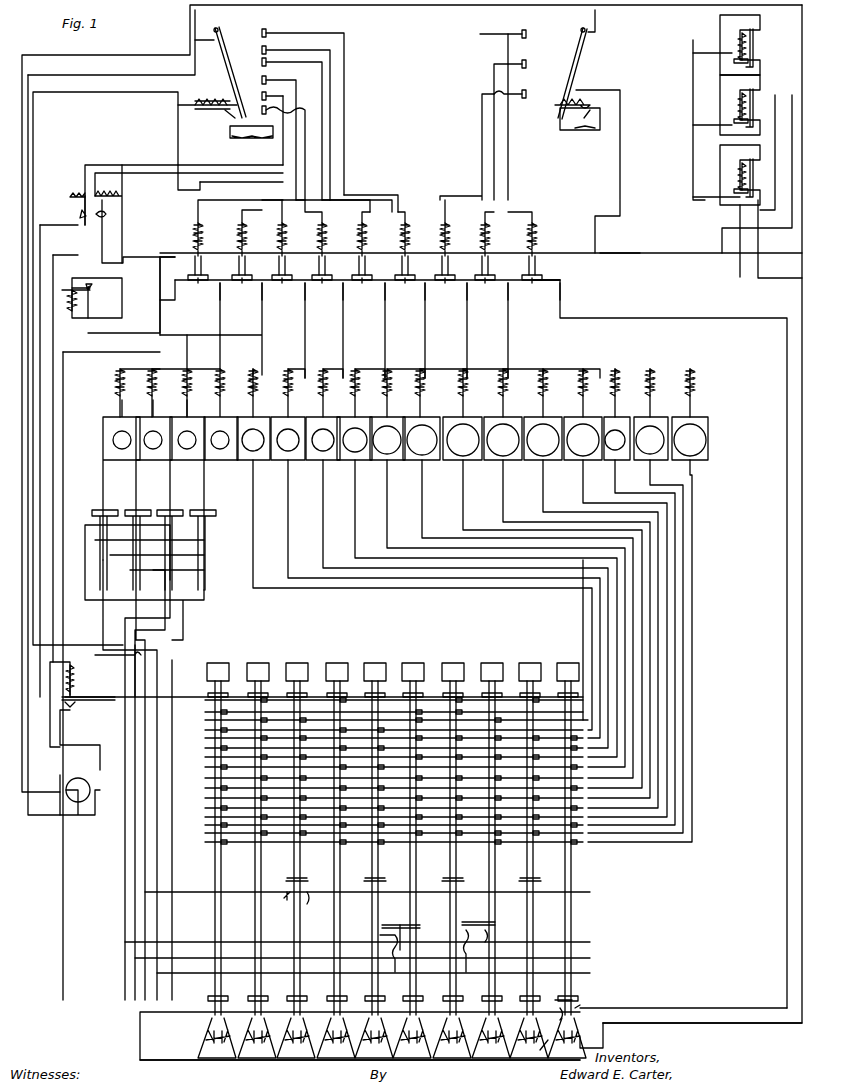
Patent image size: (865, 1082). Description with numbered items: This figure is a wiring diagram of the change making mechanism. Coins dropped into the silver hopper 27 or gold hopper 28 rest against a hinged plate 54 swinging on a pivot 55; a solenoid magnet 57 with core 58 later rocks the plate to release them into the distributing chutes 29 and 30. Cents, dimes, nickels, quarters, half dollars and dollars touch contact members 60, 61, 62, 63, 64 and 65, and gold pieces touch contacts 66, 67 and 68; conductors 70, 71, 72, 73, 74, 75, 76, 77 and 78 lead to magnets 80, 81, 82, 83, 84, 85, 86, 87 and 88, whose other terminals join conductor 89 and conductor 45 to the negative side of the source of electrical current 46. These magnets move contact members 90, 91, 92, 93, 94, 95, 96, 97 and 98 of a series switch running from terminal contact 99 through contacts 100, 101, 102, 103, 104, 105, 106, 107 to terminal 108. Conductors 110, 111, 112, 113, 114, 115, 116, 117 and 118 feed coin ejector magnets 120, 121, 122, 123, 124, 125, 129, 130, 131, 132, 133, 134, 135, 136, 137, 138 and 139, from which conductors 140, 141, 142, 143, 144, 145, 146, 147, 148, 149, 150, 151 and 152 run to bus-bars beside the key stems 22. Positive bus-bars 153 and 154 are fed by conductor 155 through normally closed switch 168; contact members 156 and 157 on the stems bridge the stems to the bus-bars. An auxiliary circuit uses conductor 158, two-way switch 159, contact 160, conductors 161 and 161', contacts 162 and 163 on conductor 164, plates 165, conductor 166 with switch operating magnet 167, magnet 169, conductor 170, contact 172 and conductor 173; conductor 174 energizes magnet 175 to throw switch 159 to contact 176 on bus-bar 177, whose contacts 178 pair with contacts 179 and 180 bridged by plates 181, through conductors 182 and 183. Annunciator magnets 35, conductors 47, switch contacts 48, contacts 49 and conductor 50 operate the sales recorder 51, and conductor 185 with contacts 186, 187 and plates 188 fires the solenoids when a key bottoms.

The stems 22 is at (230, 665).
The hopper 27 is at (228, 72).
The hopper 28 is at (578, 66).
The distributing chute 29 is at (228, 134).
The distributing chute 30 is at (568, 132).
The annunciator magnet 35 is at (732, 178).
The conductor 45 is at (135, 52).
The source of electrical current 46 is at (78, 802).
The conductor 47 is at (658, 1022).
The switch contact 48 is at (578, 1035).
The contact member 49 is at (543, 1041).
The conductor 50 is at (514, 1064).
The sales recorder 51 is at (778, 86).
The hinged plate 54 is at (584, 80).
The pivot 55 is at (214, 30).
The solenoid magnet 57 is at (396, 98).
The core 58 is at (398, 116).
The contact member 60 is at (283, 148).
The contact member 61 is at (268, 93).
The contact member 62 is at (268, 77).
The contact member 63 is at (268, 59).
The contact member 64 is at (268, 47).
The contact member 65 is at (268, 30).
The contact member 66 is at (518, 86).
The contact member 67 is at (518, 56).
The contact member 68 is at (518, 26).
The conductor 70 is at (306, 118).
The conductor 71 is at (281, 148).
The conductor 72 is at (292, 88).
The conductor 73 is at (322, 62).
The conductor 74 is at (328, 58).
The conductor 75 is at (345, 45).
The conductor 76 is at (482, 96).
The conductor 77 is at (496, 66).
The conductor 78 is at (506, 44).
The magnet 80 is at (271, 240).
The magnet 81 is at (224, 240).
The magnet 82 is at (235, 245).
The magnet 83 is at (312, 240).
The magnet 84 is at (352, 246).
The magnet 85 is at (394, 246).
The magnet 86 is at (434, 240).
The magnet 87 is at (474, 246).
The magnet 88 is at (520, 246).
The conductor 89 is at (548, 253).
The contact member 90 is at (294, 269).
The contact member 91 is at (210, 269).
The contact member 92 is at (254, 269).
The contact member 93 is at (334, 269).
The contact member 94 is at (374, 269).
The contact member 95 is at (417, 269).
The contact member 96 is at (457, 269).
The contact member 97 is at (497, 269).
The contact member 98 is at (546, 278).
The terminal contact member 99 is at (171, 278).
The contact member 100 is at (277, 291).
The contact member 101 is at (235, 291).
The contact member 102 is at (320, 291).
The contact member 103 is at (358, 291).
The contact member 104 is at (400, 291).
The contact member 105 is at (440, 291).
The contact member 106 is at (482, 291).
The contact member 107 is at (524, 291).
The contact member 108 is at (555, 290).
The conductor 110 is at (258, 316).
The conductor 111 is at (214, 316).
The conductor 112 is at (303, 326).
The conductor 113 is at (341, 340).
The conductor 114 is at (383, 326).
The conductor 115 is at (423, 340).
The conductor 116 is at (465, 326).
The conductor 117 is at (506, 340).
The conductor 118 is at (550, 326).
The coin ejector magnet 120 is at (243, 393).
The coin ejector magnet 121 is at (204, 466).
The coin ejector magnet 122 is at (283, 393).
The coin ejector magnet 123 is at (357, 393).
The coin ejector magnet 124 is at (393, 393).
The coin ejector magnet 125 is at (431, 393).
The coin ejector magnet 129 is at (176, 376).
The coin ejector magnet 130 is at (172, 393).
The coin ejector magnet 131 is at (124, 393).
The coin ejector magnet 132 is at (319, 393).
The coin ejector magnet 133 is at (472, 393).
The coin ejector magnet 134 is at (536, 393).
The coin ejector magnet 135 is at (530, 393).
The coin ejector magnet 136 is at (570, 393).
The coin ejector magnet 137 is at (170, 465).
The coin ejector magnet 138 is at (136, 465).
The coin ejector magnet 139 is at (103, 465).
The conductor and bus-bar 140 is at (278, 468).
The conductor and bus-bar 141 is at (312, 468).
The conductor and bus-bar 142 is at (346, 468).
The conductor and bus-bar 143 is at (380, 468).
The conductor and bus-bar 144 is at (412, 468).
The conductor and bus-bar 145 is at (448, 468).
The conductor and bus-bar 146 is at (490, 468).
The conductor and bus-bar 147 is at (530, 468).
The conductor and bus-bar 148 is at (570, 468).
The conductor and bus-bar 149 is at (610, 468).
The conductor and bus-bar 150 is at (638, 468).
The conductor and bus-bar 151 is at (676, 468).
The conductor and bus-bar 152 is at (716, 468).
The positive bus-bar 153 is at (190, 692).
The positive bus-bar 154 is at (176, 620).
The conductor 155 is at (62, 732).
The contact member 156 is at (302, 700).
The contact members 157 is at (212, 720).
The conductor 158 is at (184, 186).
The two-way switch member 159 is at (78, 192).
The contact member 160 is at (80, 215).
The conductor and bus-bar 161 is at (315, 558).
The conductor 161' is at (67, 264).
The contact members 162 is at (276, 891).
The contact members 163 is at (322, 893).
The conductor 164 is at (592, 858).
The contact plates 165 is at (300, 872).
The conductor 166 is at (115, 671).
The switch operating magnet 167 is at (78, 706).
The switch member 168 is at (88, 696).
The magnet 169 is at (64, 63).
The conductor 170 is at (66, 288).
The contact member 172 is at (103, 301).
The conductor 173 is at (100, 333).
The conductor 174 is at (182, 186).
The magnet 175 is at (109, 214).
The contact member 176 is at (133, 231).
The conductor and bus-bar 177 is at (182, 956).
The contacts 178 is at (380, 920).
The contacts 179 is at (371, 949).
The contact 180 is at (436, 942).
The contact plates 181 is at (392, 926).
The conductor 182 is at (180, 971).
The conductor 183 is at (176, 940).
The conductor 185 is at (100, 92).
The contact members 186 is at (593, 1000).
The contact members 187 is at (556, 996).
The contact plates 188 is at (585, 999).